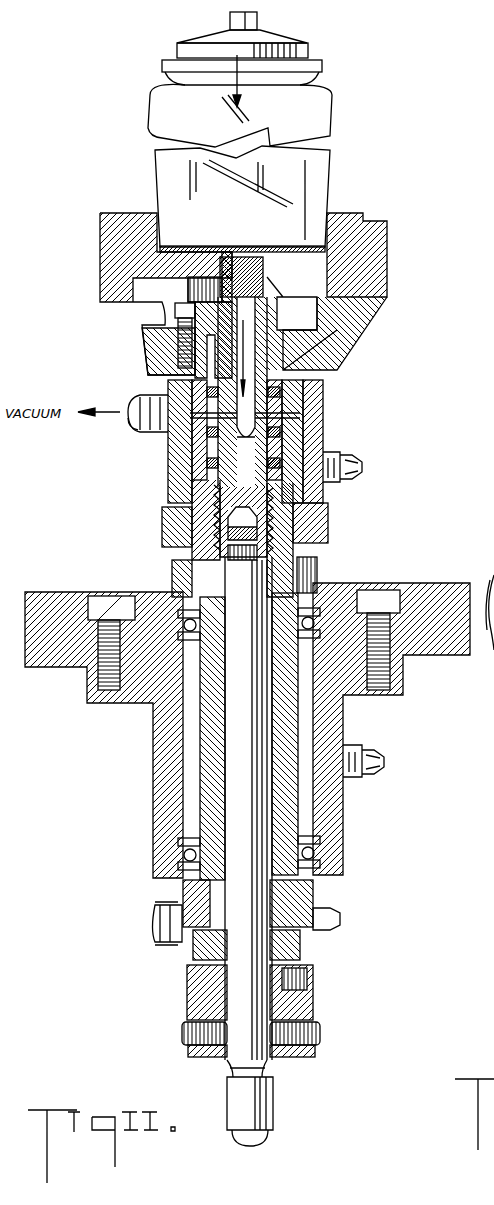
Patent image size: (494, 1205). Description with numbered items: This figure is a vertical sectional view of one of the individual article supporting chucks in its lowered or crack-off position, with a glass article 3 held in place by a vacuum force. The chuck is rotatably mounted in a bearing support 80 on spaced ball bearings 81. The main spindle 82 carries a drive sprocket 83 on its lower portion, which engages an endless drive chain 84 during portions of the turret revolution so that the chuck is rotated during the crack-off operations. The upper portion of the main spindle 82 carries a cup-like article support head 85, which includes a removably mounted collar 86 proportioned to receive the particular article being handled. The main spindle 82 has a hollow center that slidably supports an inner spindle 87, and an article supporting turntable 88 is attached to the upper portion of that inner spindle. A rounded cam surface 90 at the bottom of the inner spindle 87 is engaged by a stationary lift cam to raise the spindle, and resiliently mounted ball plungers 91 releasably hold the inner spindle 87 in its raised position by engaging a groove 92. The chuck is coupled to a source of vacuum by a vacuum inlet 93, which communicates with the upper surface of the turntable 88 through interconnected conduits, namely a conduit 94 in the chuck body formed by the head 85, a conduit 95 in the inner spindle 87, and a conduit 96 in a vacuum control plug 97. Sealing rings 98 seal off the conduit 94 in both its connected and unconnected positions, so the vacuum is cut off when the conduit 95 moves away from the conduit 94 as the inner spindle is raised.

The glass article 3 is at (328, 163).
The bearing support 80 is at (340, 724).
The ball bearings 81 is at (320, 598).
The main spindle 82 is at (280, 560).
The drive sprocket 83 is at (340, 918).
The endless drive chain 84 is at (170, 942).
The article support head 85 is at (387, 256).
The collar 86 is at (364, 215).
The inner spindle 87 is at (295, 440).
The article supporting turntable 88 is at (300, 246).
The rounded cam surface 90 is at (262, 1135).
The ball plungers 91 is at (182, 1036).
The groove 92 is at (270, 1070).
The vacuum inlet 93 is at (134, 400).
The conduit 94 is at (200, 416).
The conduit 95 is at (300, 395).
The conduit 96 is at (236, 265).
The vacuum control plug 97 is at (265, 310).
The sealing rings 98 is at (192, 468).